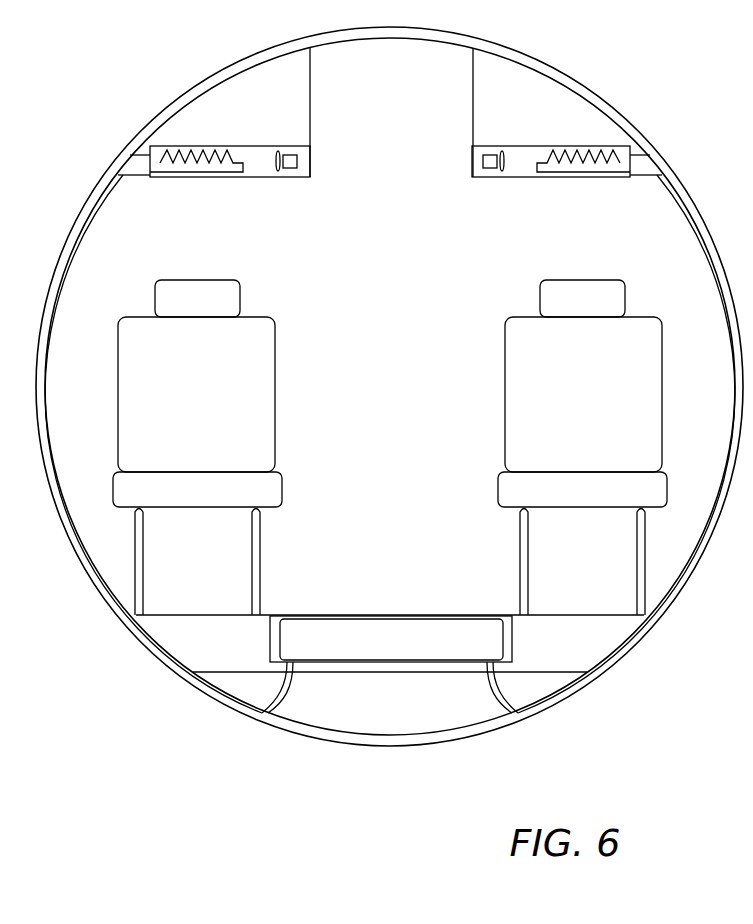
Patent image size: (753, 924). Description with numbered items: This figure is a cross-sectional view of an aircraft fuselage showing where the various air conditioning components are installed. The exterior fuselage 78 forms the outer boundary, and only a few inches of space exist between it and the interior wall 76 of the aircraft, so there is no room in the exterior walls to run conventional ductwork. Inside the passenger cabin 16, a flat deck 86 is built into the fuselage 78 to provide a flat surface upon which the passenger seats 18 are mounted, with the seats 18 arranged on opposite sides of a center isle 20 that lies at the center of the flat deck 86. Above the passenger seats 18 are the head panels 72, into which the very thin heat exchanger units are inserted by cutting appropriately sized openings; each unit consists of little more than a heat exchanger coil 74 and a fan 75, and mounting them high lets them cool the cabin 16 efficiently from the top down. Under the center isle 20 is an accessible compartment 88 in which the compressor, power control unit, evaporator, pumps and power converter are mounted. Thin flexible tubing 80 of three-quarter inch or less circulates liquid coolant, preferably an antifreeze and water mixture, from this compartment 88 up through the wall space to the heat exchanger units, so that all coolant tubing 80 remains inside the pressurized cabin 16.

The passenger cabin 16 is at (140, 240).
The passenger seats 18 is at (245, 422).
The center isle 20 is at (272, 608).
The head panels 72 is at (258, 168).
The heat exchanger coil 74 is at (190, 165).
The fan 75 is at (297, 161).
The interior wall 76 is at (447, 43).
The exterior fuselage 78 is at (522, 50).
The tubing 80 is at (283, 690).
The flat deck 86 is at (210, 614).
The accessible compartment 88 is at (508, 648).